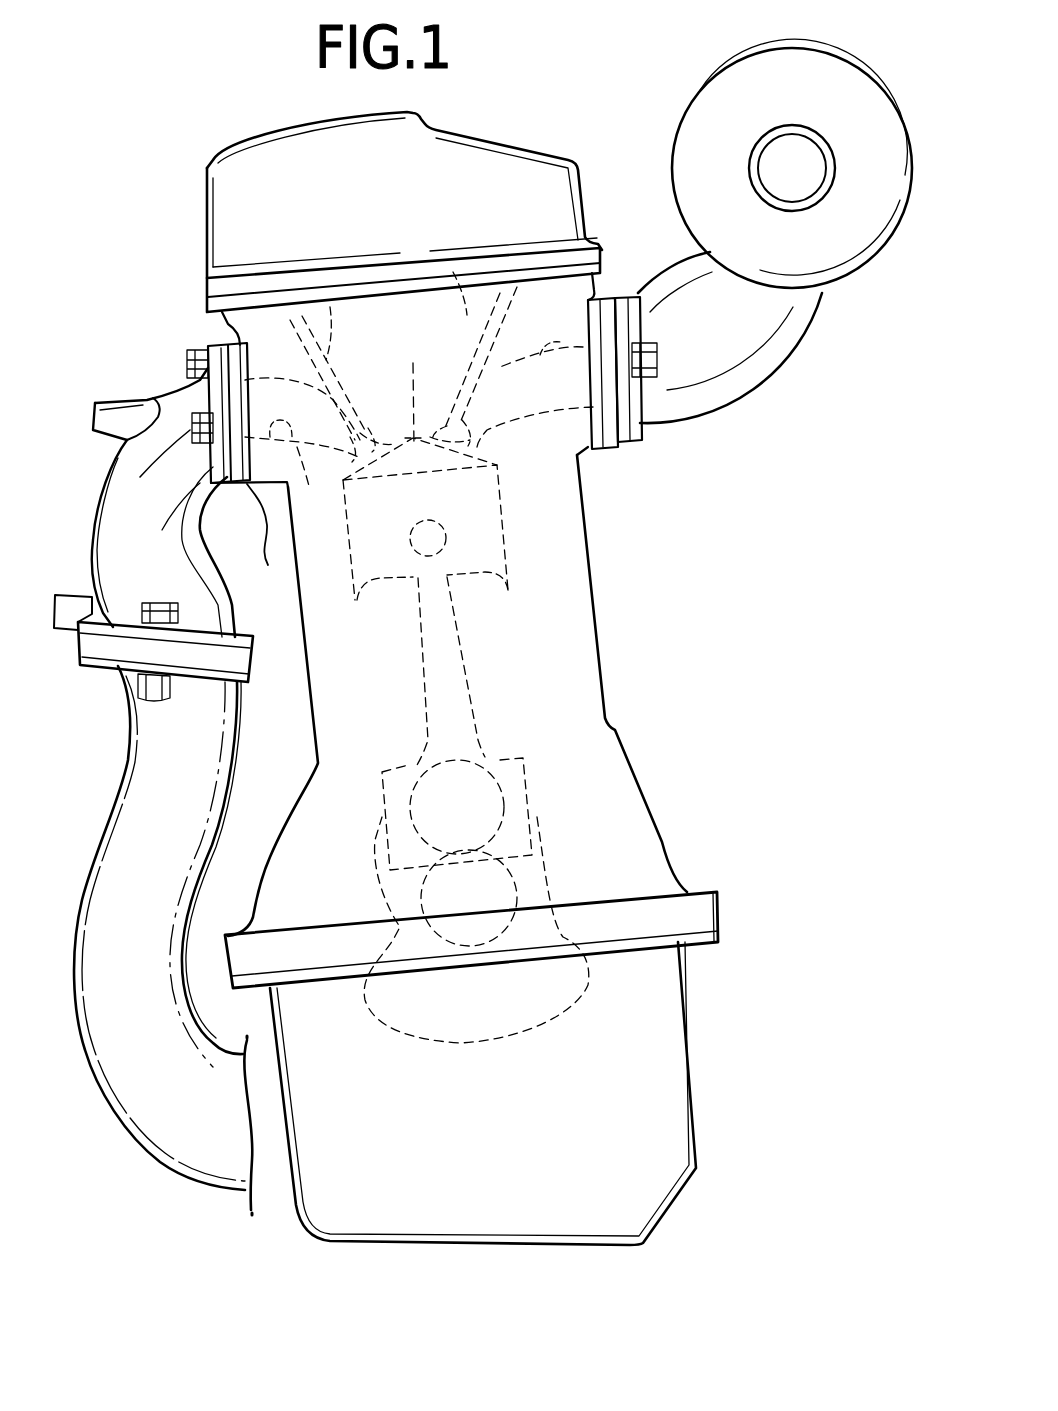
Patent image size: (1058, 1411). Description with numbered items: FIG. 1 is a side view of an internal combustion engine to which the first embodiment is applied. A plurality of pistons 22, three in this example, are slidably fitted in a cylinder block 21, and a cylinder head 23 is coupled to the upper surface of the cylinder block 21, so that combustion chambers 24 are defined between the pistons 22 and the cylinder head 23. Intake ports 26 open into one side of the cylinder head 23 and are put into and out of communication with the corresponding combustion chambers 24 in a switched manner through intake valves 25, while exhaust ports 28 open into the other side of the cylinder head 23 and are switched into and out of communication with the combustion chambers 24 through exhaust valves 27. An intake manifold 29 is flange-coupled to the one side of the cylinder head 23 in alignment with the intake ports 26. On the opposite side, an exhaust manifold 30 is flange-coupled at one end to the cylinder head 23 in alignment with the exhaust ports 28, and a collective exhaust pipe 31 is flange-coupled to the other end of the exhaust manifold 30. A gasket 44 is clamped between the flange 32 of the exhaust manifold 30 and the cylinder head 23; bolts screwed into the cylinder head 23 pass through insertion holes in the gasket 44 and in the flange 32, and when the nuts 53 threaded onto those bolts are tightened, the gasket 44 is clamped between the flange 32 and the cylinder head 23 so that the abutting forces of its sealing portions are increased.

The cylinder block 21 is at (586, 624).
The piston 22 is at (490, 533).
The cylinder head 23 is at (530, 290).
The combustion chamber 24 is at (405, 381).
The intake valve 25 is at (453, 272).
The intake port 26 is at (603, 293).
The exhaust valve 27 is at (330, 307).
The exhaust port 28 is at (302, 461).
The intake manifold 29 is at (752, 392).
The exhaust manifold 30 is at (152, 392).
The collective exhaust pipe 31 is at (118, 778).
The flange 32 is at (159, 533).
The gasket 44 is at (175, 634).
The nut 53 is at (151, 479).